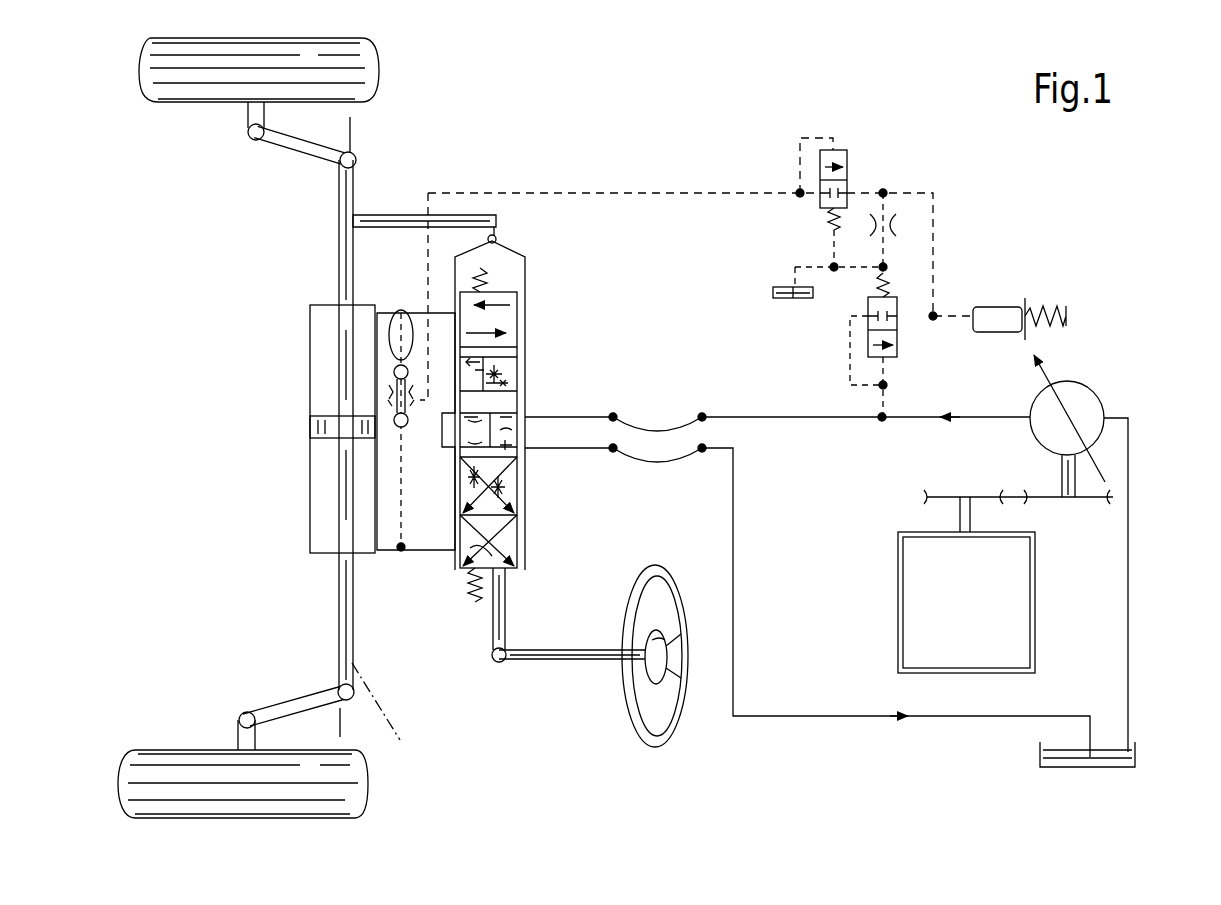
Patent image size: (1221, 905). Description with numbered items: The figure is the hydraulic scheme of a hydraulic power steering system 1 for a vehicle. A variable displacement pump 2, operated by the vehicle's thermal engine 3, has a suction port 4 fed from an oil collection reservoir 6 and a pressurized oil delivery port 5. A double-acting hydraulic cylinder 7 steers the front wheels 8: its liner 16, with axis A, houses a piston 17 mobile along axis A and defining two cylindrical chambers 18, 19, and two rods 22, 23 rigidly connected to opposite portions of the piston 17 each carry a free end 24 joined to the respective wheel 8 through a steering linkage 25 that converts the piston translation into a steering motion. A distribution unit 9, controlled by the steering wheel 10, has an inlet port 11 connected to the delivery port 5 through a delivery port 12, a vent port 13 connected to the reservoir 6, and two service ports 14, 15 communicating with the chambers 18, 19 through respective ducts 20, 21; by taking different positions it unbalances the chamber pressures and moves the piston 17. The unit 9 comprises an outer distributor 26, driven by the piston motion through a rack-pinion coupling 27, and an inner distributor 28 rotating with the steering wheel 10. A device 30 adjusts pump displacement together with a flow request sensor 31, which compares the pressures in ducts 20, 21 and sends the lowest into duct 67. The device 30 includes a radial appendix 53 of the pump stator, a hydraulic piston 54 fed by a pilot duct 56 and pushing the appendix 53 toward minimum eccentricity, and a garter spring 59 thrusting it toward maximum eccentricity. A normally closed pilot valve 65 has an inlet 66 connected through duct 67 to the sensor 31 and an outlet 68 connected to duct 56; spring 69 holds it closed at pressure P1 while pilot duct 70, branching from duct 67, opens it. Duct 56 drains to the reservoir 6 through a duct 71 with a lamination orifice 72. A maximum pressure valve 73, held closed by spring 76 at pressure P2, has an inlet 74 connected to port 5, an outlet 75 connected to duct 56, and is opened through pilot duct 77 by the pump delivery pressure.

The hydraulic power steering system 1 is at (556, 690).
The displacement pump 2 is at (1092, 448).
The thermal engine 3 is at (1020, 595).
The suction port 4 is at (1105, 420).
The pressurized oil delivery port 5 is at (1045, 387).
The reservoir 6 is at (1040, 750).
The double-acting hydraulic cylinder 7 is at (296, 489).
The front wheels 8 is at (358, 95).
The distribution unit 9 is at (530, 328).
The steering wheel 10 is at (632, 716).
The inlet port 11 is at (527, 412).
The delivery port 12 is at (820, 420).
The vent port 13 is at (527, 452).
The service port 14 is at (452, 400).
The service port 15 is at (432, 462).
The liner 16 is at (308, 383).
The piston 17 is at (312, 427).
The cylindrical chamber 18 is at (318, 358).
The cylindrical chamber 19 is at (318, 505).
The duct 20 is at (388, 305).
The duct 21 is at (456, 452).
The rod 22 is at (310, 322).
The rod 23 is at (340, 467).
The free end 24 is at (343, 178).
The steering linkage 25 is at (258, 152).
The outer distributor 26 is at (527, 278).
The rack-pinion coupling 27 is at (362, 210).
The inner distributor 28 is at (480, 592).
The device for adjusting displacement 30 is at (891, 174).
The flow request sensor 31 is at (383, 440).
The radial appendix 53 is at (1027, 305).
The hydraulic piston 54 is at (990, 317).
The pilot duct 56 is at (938, 238).
The garter spring 59 is at (1060, 312).
The pilot valve 65 is at (855, 156).
The inlet 66 is at (820, 195).
The duct 67 is at (587, 190).
The outlet 68 is at (850, 195).
The spring 69 is at (835, 218).
The pilot duct 70 is at (800, 175).
The duct 71 is at (868, 268).
The lamination orifice 72 is at (890, 225).
The maximum pressure valve 73 is at (906, 353).
The inlet 74 is at (862, 310).
The outlet 75 is at (898, 321).
The spring 76 is at (893, 292).
The pilot duct 77 is at (850, 380).
The axis A is at (384, 714).